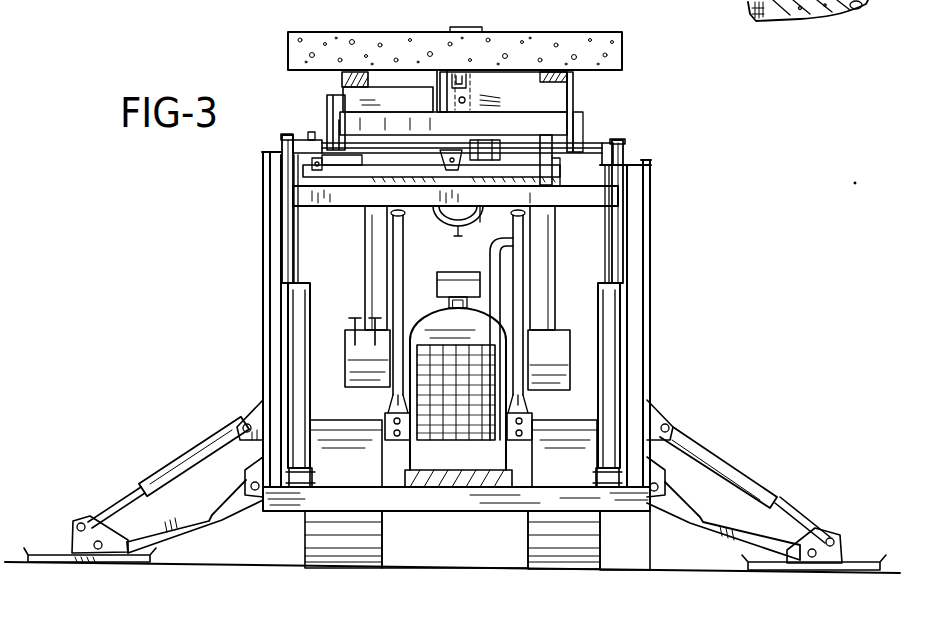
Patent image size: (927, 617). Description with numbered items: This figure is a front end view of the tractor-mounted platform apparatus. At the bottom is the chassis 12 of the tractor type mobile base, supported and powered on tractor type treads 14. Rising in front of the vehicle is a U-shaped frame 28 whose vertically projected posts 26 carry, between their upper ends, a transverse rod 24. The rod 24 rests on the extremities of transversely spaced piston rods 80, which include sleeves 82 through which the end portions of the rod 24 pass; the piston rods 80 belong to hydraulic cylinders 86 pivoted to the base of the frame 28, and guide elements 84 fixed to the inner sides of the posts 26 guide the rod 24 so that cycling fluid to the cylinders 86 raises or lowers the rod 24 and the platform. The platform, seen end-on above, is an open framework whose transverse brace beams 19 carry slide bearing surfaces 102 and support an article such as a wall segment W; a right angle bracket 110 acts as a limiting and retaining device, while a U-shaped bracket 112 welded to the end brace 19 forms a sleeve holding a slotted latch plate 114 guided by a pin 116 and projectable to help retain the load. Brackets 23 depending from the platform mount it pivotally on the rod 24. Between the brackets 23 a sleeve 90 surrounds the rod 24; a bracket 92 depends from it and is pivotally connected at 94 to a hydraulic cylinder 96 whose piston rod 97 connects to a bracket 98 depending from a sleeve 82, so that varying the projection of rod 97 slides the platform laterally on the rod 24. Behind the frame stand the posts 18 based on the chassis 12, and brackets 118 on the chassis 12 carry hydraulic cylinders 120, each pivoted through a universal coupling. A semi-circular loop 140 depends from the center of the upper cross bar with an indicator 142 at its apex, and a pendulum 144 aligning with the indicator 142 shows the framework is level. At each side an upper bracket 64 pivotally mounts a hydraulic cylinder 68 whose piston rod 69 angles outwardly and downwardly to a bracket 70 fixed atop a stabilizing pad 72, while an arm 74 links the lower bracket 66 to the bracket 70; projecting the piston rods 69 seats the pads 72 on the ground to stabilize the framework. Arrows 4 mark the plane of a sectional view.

The workpiece slab W is at (373, 33).
The right angle bracket 110 is at (466, 27).
The slide bearing surfaces 102 is at (340, 78).
The brace beams 19 is at (390, 88).
The U-shaped bracket 112 is at (442, 80).
The pin 116 is at (485, 100).
The slotted latch plate 114 is at (470, 80).
The brackets 23 is at (337, 135).
The bracket 98 is at (290, 162).
The hydraulic cylinder 96 is at (420, 167).
The pivotal connection 94 is at (458, 166).
The bracket 92 is at (505, 186).
The sleeve 90 is at (548, 172).
The rod 24 is at (587, 197).
The semi-circular loop 140 is at (482, 212).
The posts 26 is at (270, 258).
The sleeves 82 is at (308, 138).
The guide elements 84 is at (290, 216).
The piston rods 80 is at (290, 288).
The hydraulic cylinders 86 is at (295, 338).
The piston rod 97 is at (338, 165).
The posts 18 is at (368, 245).
The hydraulic cylinder 120 is at (393, 278).
The bracket 118 is at (385, 405).
The pendulum 144 is at (450, 221).
The chassis 12 is at (426, 312).
The indicator 142 is at (463, 270).
The treads 14 is at (380, 538).
The U-shaped frame 28 is at (480, 515).
The section line 4- 4 is at (626, 531).
The upper bracket 64 is at (255, 405).
The hydraulic cylinder 68 is at (200, 445).
The piston rod 69 is at (118, 505).
The bracket 70 is at (95, 522).
The stabilizing pad 72 is at (48, 555).
The lower bracket 66 is at (245, 474).
The arm 74 is at (173, 532).